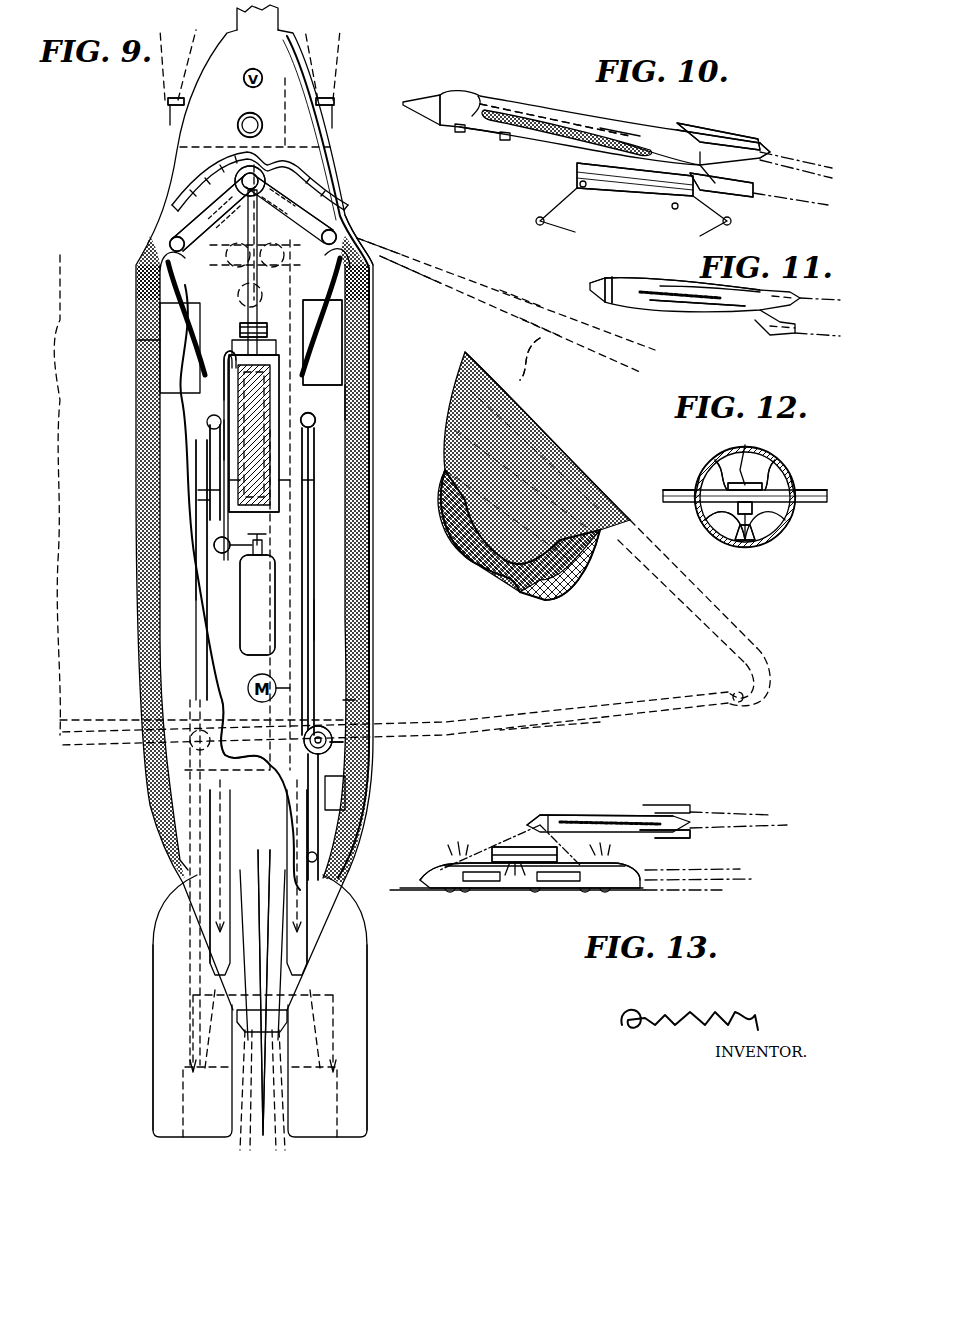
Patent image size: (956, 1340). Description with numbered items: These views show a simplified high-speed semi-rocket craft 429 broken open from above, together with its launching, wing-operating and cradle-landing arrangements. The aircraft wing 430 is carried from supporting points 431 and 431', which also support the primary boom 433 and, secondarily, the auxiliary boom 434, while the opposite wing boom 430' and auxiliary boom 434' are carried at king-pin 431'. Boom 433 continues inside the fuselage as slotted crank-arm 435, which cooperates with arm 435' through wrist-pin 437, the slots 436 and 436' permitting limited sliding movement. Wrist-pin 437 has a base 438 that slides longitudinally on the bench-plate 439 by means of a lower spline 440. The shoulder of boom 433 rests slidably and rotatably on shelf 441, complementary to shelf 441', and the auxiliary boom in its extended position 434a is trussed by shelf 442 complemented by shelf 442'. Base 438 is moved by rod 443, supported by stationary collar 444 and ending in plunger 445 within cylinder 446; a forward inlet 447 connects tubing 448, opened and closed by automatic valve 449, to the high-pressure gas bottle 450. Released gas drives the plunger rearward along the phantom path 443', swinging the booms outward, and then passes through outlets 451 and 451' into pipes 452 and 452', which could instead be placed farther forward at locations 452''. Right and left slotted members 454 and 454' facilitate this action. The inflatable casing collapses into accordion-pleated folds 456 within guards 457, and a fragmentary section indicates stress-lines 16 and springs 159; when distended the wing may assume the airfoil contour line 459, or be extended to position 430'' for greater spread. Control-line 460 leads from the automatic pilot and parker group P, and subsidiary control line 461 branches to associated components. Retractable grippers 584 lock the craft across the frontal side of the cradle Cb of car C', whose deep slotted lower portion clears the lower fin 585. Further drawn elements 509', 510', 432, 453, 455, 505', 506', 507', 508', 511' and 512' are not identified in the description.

In FIG. 9, the control-line 460 is at (285, 78).
In FIG. 9, the guide box 510' is at (352, 87).
In FIG. 9, the guide box 509' is at (141, 109).
In FIG. 9, the automatic pilot and parker group P is at (240, 125).
In FIG. 9, the wrist-pin 437 is at (248, 165).
In FIG. 12, the wrist-pin 437 is at (740, 482).
In FIG. 9, the slot 436 is at (309, 159).
In FIG. 9, the slotted crank-arm 435 is at (323, 187).
In FIG. 12, the slotted crank-arm 435 is at (790, 459).
In FIG. 9, the craft 429 is at (359, 203).
In FIG. 11, the craft 429 is at (622, 260).
In FIG. 13, the craft 429 is at (537, 797).
In FIG. 9, the slot 436' is at (178, 200).
In FIG. 9, the shelf 441 is at (363, 279).
In FIG. 12, the shelf 441 is at (809, 468).
In FIG. 9, the arm 435' is at (181, 215).
In FIG. 12, the arm 435' is at (693, 459).
In FIG. 9, the shelf 441' is at (155, 285).
In FIG. 10, the shelf 441' is at (480, 92).
In FIG. 12, the shelf 441' is at (664, 474).
In FIG. 9, the supporting point 431 is at (372, 223).
In FIG. 9, the supporting point 431' is at (142, 234).
In FIG. 9, the bench-plate 439 is at (375, 245).
In FIG. 12, the bench-plate 439 is at (715, 540).
In FIG. 9, the folds 456 is at (415, 262).
In FIG. 9, the stationary collar 444 is at (240, 330).
In FIG. 9, the guards 457 is at (415, 318).
In FIG. 9, the primary boom 433 is at (435, 330).
In FIG. 9, the opposite wing boom 430' is at (121, 348).
In FIG. 11, the opposite wing boom 430' is at (643, 268).
In FIG. 9, the forward inlet 447 is at (222, 360).
In FIG. 9, the rod 443 is at (365, 342).
In FIG. 12, the rod 443 is at (700, 513).
In FIG. 9, the plunger 445 is at (240, 400).
In FIG. 9, the phantom path 443' is at (386, 402).
In FIG. 9, the forward locations 452'' is at (369, 420).
In FIG. 9, the cylinder 446 is at (225, 435).
In FIG. 9, the outlet 451 is at (352, 458).
In FIG. 9, the tubing 448 is at (218, 460).
In FIG. 9, the outlet 451' is at (159, 474).
In FIG. 9, the pipe 452 is at (364, 475).
In FIG. 9, the pipe 452' is at (149, 491).
In FIG. 9, the auxiliary boom 434 is at (328, 654).
In FIG. 9, the auxiliary boom 434' is at (143, 520).
In FIG. 9, the automatic valve 449 is at (215, 548).
In FIG. 9, the high-pressure gas bottle 450 is at (245, 580).
In FIG. 9, the rod 453 is at (315, 575).
In FIG. 9, the slotted member 454' is at (143, 570).
In FIG. 9, the slotted member 454 is at (371, 616).
In FIG. 9, the guide 455 is at (330, 700).
In FIG. 9, the shelf 442 is at (380, 710).
In FIG. 9, the subsidiary control line 461 is at (250, 712).
In FIG. 9, the pulley 432 is at (333, 745).
In FIG. 9, the channel 511' is at (159, 876).
In FIG. 9, the channel 512' is at (361, 876).
In FIG. 9, the fin 505' is at (139, 1037).
In FIG. 10, the fin 505' is at (793, 150).
In FIG. 9, the fin 506' is at (390, 1037).
In FIG. 9, the nozzle 507' is at (303, 1003).
In FIG. 10, the nozzle 507' is at (722, 124).
In FIG. 9, the extended wing position 430'' is at (559, 359).
In FIG. 9, the aircraft wing 430 is at (549, 436).
In FIG. 11, the aircraft wing 430 is at (697, 319).
In FIG. 9, the springs 159 is at (482, 560).
In FIG. 9, the stress-lines 16 is at (507, 590).
In FIG. 9, the extended position 434a is at (538, 710).
In FIG. 10, the contour line 459 is at (520, 106).
In FIG. 10, the shelf 442' is at (627, 110).
In FIG. 10, the retractable grippers 584 is at (496, 150).
In FIG. 13, the retractable grippers 584 is at (556, 812).
In FIG. 10, the fin 508' is at (751, 194).
In FIG. 10, the cradle Cb is at (632, 195).
In FIG. 13, the cradle Cb is at (498, 850).
In FIG. 12, the base 438 is at (788, 522).
In FIG. 12, the lower spline 440 is at (752, 545).
In FIG. 13, the lower fin 585 is at (662, 838).
In FIG. 13, the car C' is at (530, 895).